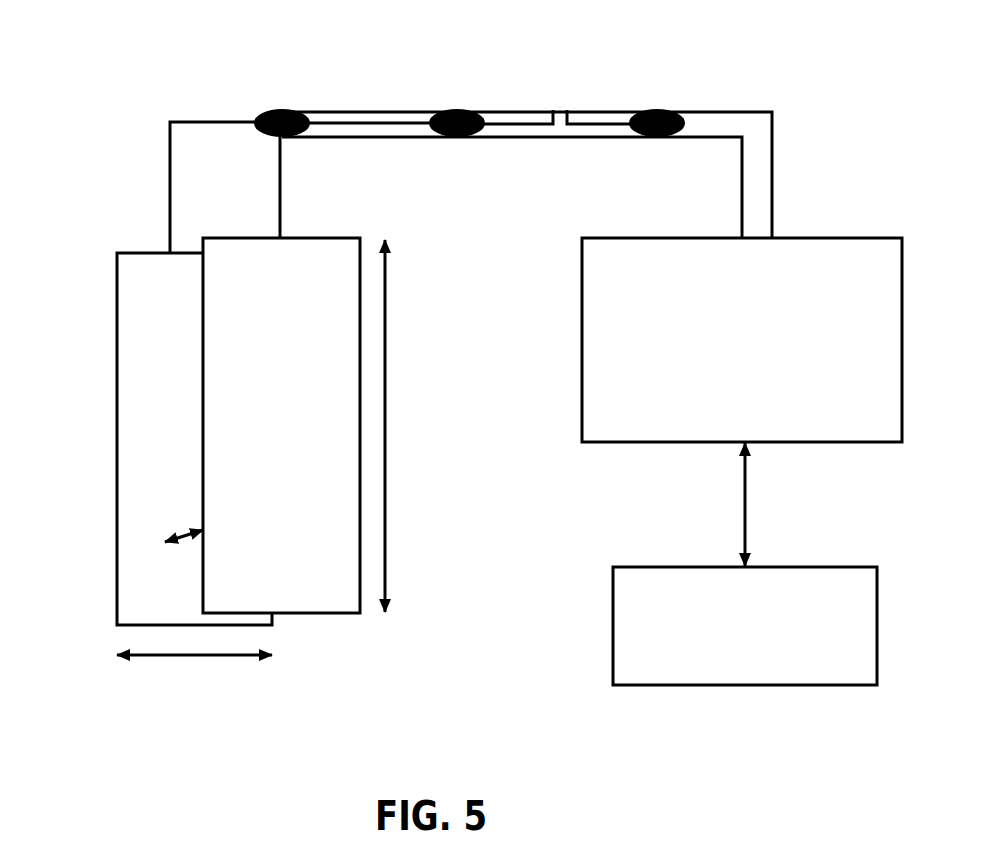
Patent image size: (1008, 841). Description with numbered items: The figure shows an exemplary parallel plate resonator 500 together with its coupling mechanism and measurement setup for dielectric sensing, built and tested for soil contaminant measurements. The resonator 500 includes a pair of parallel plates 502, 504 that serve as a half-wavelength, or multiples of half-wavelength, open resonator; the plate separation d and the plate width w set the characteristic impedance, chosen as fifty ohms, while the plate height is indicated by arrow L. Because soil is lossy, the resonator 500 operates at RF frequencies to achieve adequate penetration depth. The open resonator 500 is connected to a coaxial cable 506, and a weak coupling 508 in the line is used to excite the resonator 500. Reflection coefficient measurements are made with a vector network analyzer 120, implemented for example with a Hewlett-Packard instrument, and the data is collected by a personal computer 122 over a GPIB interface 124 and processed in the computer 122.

The parallel plate resonator 500 is at (503, 36).
The parallel plate 502 is at (155, 340).
The parallel plate 504 is at (222, 523).
The coaxial cable 506 is at (555, 152).
The weak coupling 508 is at (552, 152).
The vector network analyzer 120 is at (742, 340).
The personal computer 122 is at (745, 626).
The GPIB interface 124 is at (805, 504).